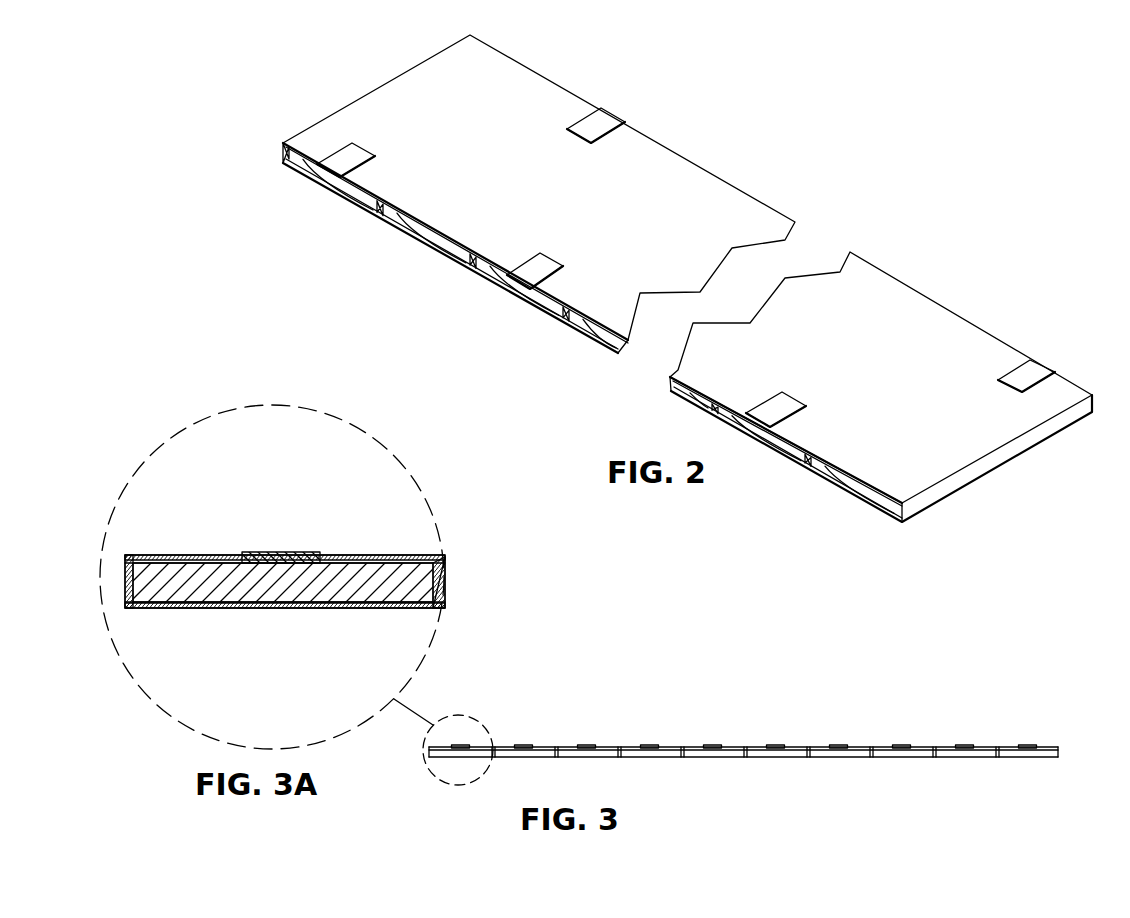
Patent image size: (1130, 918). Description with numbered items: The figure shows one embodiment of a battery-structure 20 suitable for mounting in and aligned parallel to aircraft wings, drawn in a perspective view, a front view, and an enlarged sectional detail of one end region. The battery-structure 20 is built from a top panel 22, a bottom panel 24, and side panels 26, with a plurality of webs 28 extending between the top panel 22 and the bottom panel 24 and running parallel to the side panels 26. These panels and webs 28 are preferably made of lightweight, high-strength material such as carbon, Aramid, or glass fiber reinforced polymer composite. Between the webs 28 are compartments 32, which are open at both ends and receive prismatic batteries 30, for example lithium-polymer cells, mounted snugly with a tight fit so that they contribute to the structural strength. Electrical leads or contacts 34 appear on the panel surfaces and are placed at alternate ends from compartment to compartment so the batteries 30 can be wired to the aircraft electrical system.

In FIG. 2, the battery-structure 20 is at (660, 293).
In FIG. 3, the battery-structure 20 is at (759, 729).
In FIG. 2, the top panel 22 is at (938, 322).
In FIG. 3A, the top panel 22 is at (210, 556).
In FIG. 3, the top panel 22 is at (918, 747).
In FIG. 2, the bottom panel 24 is at (852, 495).
In FIG. 3A, the bottom panel 24 is at (287, 608).
In FIG. 3, the bottom panel 24 is at (887, 757).
In FIG. 2, the side panels 26 is at (283, 153).
In FIG. 3A, the side panels 26 is at (132, 580).
In FIG. 3, the side panels 26 is at (1060, 747).
In FIG. 2, the webs 28 is at (468, 258).
In FIG. 3A, the webs 28 is at (442, 572).
In FIG. 3, the webs 28 is at (620, 753).
In FIG. 3A, the batteries 30 is at (345, 572).
In FIG. 3, the batteries 30 is at (680, 748).
In FIG. 3A, the compartments 32 is at (398, 563).
In FIG. 2, the electrical leads or contacts 34 is at (360, 156).
In FIG. 3A, the electrical leads or contacts 34 is at (280, 552).